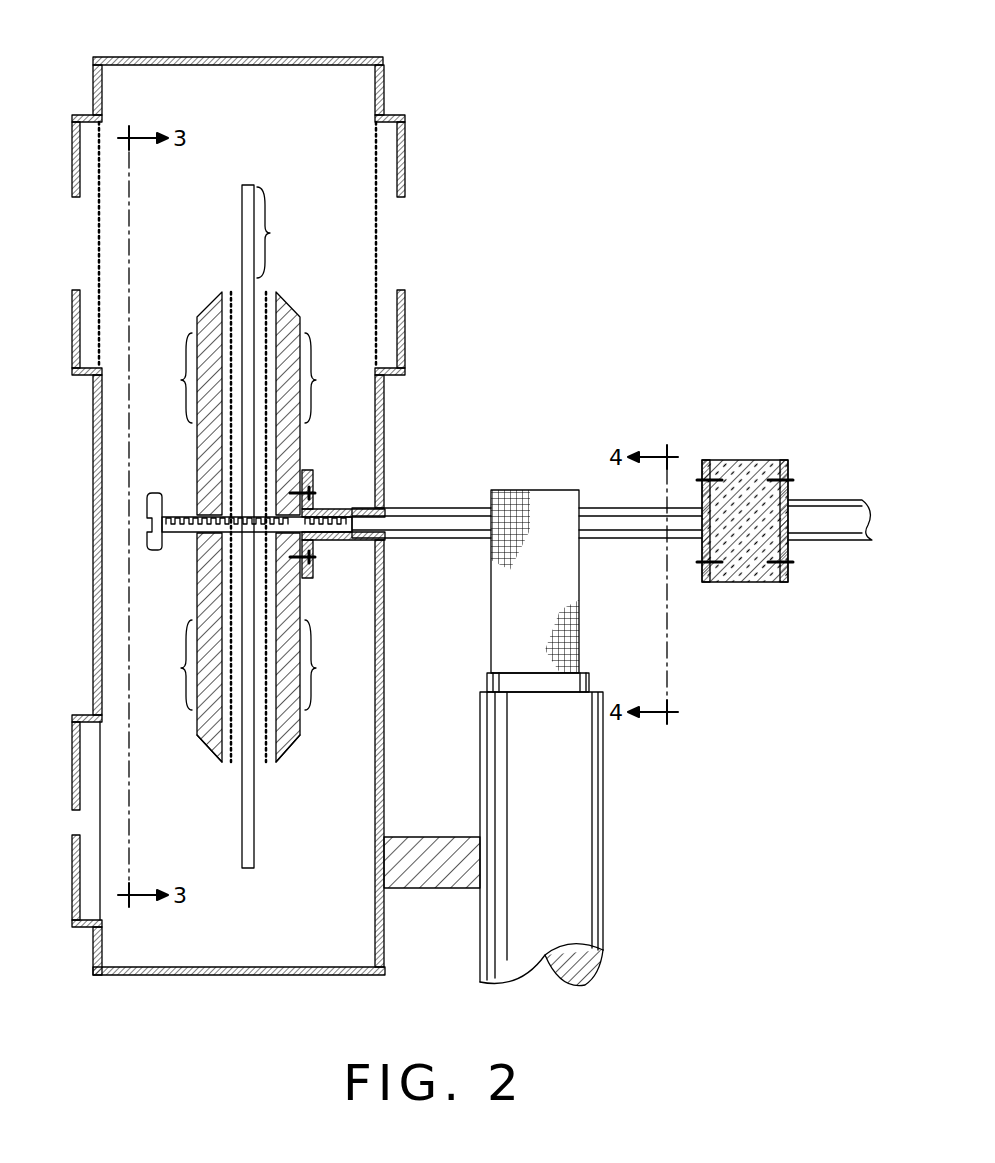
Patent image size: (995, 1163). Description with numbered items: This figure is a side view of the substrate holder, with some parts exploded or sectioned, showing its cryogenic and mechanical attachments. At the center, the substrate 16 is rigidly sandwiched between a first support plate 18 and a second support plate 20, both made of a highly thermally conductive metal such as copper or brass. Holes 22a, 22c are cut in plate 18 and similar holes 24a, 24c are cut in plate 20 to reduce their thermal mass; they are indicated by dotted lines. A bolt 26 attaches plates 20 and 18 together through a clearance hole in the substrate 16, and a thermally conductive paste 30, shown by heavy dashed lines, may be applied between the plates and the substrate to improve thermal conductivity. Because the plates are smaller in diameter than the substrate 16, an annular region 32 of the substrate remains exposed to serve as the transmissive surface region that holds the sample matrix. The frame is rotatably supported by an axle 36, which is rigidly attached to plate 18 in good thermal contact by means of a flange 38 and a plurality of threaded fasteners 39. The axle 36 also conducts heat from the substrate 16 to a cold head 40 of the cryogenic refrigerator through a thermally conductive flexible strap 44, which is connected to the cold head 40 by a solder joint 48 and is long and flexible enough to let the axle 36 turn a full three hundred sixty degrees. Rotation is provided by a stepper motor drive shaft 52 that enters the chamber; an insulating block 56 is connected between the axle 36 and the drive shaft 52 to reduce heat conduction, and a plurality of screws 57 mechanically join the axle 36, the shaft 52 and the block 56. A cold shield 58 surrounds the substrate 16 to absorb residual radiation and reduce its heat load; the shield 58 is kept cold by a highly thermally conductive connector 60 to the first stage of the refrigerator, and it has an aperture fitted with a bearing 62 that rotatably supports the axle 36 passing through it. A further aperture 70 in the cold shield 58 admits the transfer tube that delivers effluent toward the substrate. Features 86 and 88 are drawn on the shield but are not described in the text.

The shaft 16 is at (257, 857).
The clamp member 18 is at (290, 742).
The clamp member 20 is at (203, 742).
The clamp block 22a is at (180, 403).
The clamp block 22c is at (181, 647).
The clamp block 24a is at (317, 403).
The clamp block 24c is at (317, 647).
The screw head 26 is at (153, 553).
The spacer 30 is at (232, 290).
The shaft upper portion 32 is at (278, 232).
The drive shaft 36 is at (412, 522).
The bracket 38 is at (303, 478).
The fastener 39 is at (313, 493).
The cylinder 40 is at (575, 793).
The block 44 is at (497, 580).
The collar 48 is at (510, 684).
The output shaft 52 is at (838, 500).
The coupling 56 is at (752, 578).
The set screw 57 is at (700, 478).
The housing 58 is at (266, 57).
The mounting bracket 60 is at (447, 889).
The bushing 62 is at (386, 541).
The lower flange 70 is at (73, 830).
The right flange 86 is at (403, 213).
The left flange 88 is at (73, 208).